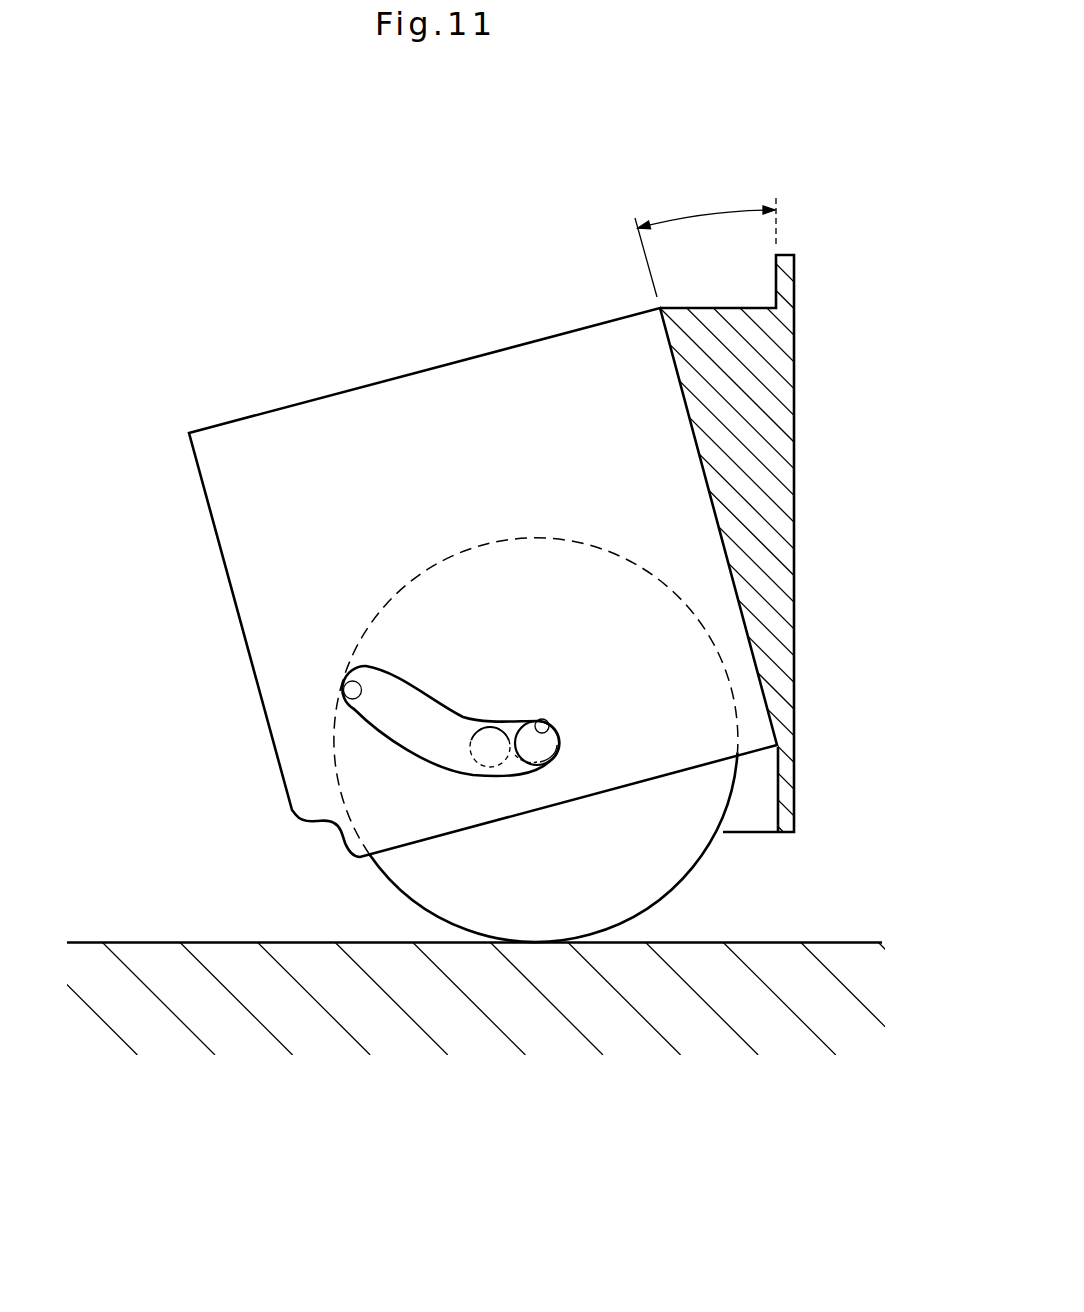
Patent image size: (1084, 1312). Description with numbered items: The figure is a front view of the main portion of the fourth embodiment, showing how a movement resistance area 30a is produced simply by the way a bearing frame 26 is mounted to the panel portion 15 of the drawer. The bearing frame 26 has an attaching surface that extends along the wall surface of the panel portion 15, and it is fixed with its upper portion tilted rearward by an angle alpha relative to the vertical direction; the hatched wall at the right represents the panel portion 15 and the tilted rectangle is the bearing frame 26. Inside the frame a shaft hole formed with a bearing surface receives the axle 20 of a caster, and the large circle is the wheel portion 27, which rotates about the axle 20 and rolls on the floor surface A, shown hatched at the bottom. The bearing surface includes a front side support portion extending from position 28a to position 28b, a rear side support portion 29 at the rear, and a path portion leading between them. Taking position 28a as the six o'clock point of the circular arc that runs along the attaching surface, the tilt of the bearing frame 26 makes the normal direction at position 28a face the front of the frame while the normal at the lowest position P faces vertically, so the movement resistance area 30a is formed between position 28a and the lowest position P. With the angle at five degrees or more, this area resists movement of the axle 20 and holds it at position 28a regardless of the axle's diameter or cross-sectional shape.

The panel portion 15 is at (757, 458).
The axle 20 is at (513, 742).
The bearing frame 26 is at (248, 472).
The wheel portion 27 is at (423, 874).
The position 28a is at (553, 725).
The position 28b is at (537, 775).
The rear side support portion 29 is at (345, 710).
The movement resistance area 30a is at (505, 725).
The lowest position P is at (473, 726).
The floor surface A is at (210, 941).